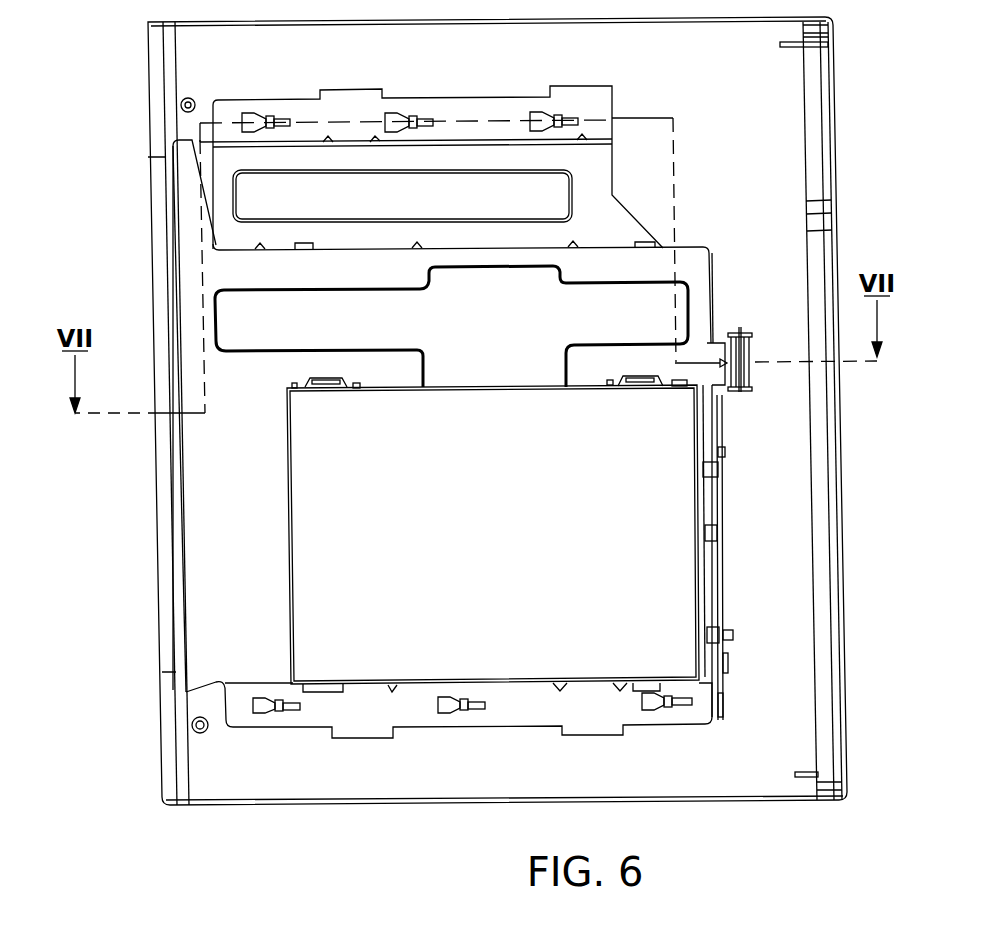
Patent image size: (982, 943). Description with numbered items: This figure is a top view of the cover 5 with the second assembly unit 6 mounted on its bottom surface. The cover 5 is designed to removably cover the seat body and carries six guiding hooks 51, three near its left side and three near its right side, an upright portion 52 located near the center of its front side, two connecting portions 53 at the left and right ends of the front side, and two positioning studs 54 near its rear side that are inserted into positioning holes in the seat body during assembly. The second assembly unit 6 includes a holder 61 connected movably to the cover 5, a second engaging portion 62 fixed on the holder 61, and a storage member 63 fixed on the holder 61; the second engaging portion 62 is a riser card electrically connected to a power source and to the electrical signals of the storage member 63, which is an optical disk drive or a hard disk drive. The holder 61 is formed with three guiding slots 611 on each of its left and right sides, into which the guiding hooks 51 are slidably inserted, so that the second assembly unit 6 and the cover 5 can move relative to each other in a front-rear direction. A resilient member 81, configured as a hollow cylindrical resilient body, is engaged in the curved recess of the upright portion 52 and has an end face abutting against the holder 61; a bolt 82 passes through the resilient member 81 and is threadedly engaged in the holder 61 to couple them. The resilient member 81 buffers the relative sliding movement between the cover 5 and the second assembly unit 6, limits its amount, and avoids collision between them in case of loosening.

The cover 5 is at (851, 133).
The guiding hooks 51 is at (283, 120).
The upright portion 52 is at (740, 338).
The connecting portions 53 is at (783, 44).
The positioning studs 54 is at (181, 105).
The second assembly unit 6 is at (347, 722).
The holder 61 is at (375, 727).
The guiding slots 611 is at (255, 121).
The second engaging portion 62 is at (721, 546).
The storage member 63 is at (660, 578).
The resilient member 81 is at (750, 390).
The bolt 82 is at (754, 349).